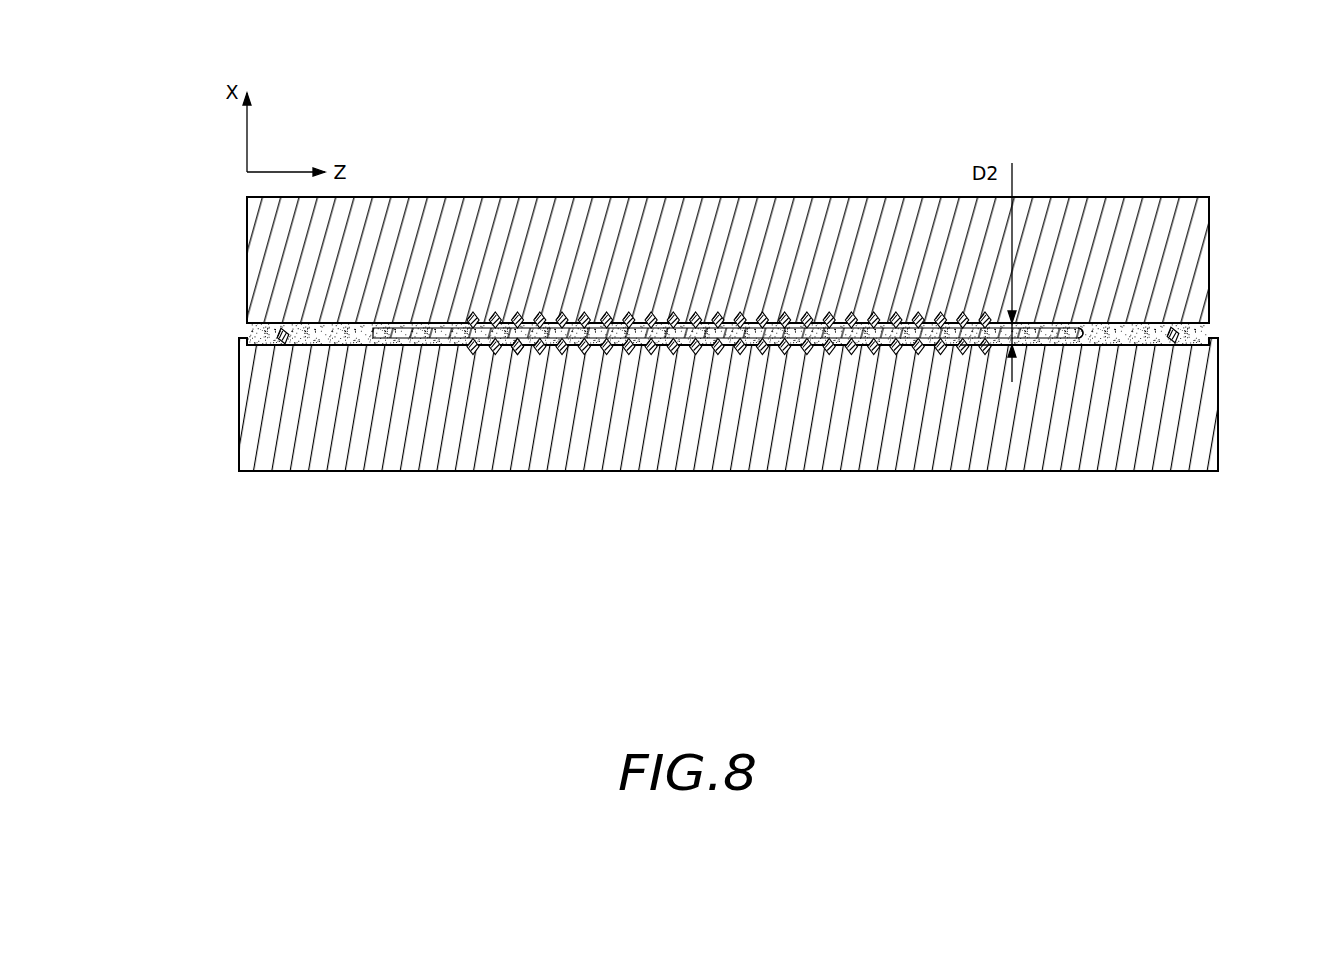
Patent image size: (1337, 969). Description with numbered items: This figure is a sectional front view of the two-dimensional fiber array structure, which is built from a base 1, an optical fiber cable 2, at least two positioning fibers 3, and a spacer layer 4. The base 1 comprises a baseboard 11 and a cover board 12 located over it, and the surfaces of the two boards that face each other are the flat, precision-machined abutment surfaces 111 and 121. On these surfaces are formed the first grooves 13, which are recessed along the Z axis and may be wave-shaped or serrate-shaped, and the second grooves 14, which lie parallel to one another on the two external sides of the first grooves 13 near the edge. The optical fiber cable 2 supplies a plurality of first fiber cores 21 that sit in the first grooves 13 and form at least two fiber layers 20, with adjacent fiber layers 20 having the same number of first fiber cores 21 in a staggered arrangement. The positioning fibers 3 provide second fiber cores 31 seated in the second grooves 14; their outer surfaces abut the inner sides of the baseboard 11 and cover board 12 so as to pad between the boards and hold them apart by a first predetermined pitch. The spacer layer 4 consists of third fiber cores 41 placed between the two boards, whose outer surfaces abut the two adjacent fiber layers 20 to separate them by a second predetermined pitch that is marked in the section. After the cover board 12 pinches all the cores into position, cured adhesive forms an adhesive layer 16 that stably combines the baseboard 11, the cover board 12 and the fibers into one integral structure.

The base 1 is at (767, 309).
The baseboard 11 is at (1200, 425).
The abutment surface 111 is at (1217, 342).
The cover board 12 is at (1178, 305).
The abutment surface 121 is at (1205, 350).
The first groove 13 is at (988, 343).
The second groove 14 is at (1170, 345).
The adhesive layer 16 is at (1093, 338).
The optical fiber cable 2 is at (690, 481).
The fiber layer 20 is at (527, 358).
The first fiber core 21 is at (473, 325).
The positioning fiber 3 is at (175, 356).
The second fiber core 31 is at (283, 340).
The spacer layer 4 is at (577, 287).
The third fiber core 41 is at (388, 337).